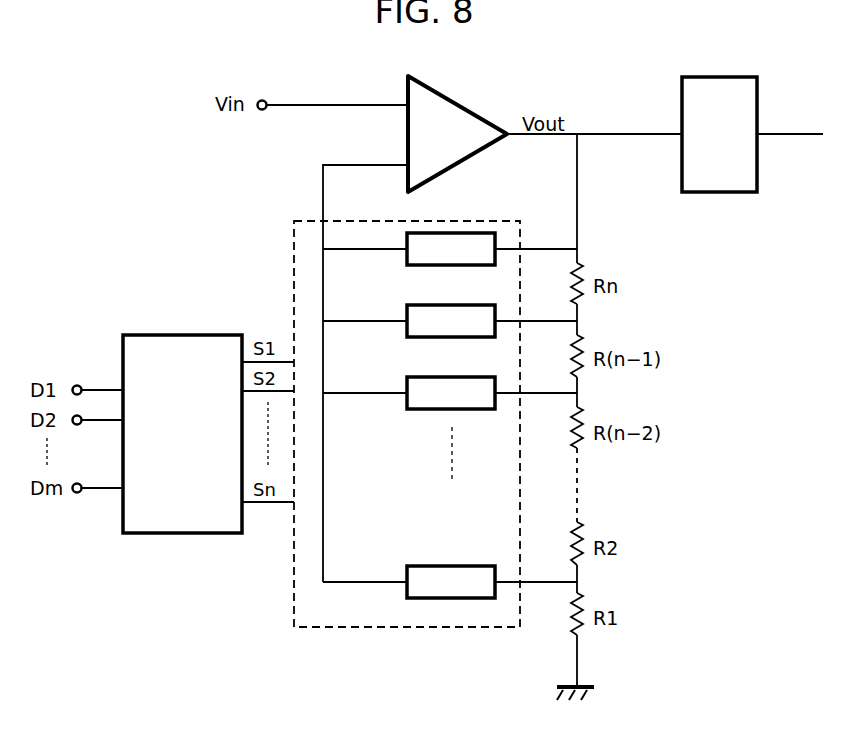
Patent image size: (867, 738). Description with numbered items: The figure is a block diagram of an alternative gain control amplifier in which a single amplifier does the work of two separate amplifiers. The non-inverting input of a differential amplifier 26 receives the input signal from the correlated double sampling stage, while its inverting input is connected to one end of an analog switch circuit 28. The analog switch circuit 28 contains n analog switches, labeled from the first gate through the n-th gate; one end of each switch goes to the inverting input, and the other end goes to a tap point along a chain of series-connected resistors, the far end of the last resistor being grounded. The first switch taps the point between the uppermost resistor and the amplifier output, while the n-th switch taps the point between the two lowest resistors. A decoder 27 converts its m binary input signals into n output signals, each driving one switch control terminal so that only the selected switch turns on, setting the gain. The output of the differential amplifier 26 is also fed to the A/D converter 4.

The differential amplifier 26 is at (436, 90).
The decoder 27 is at (183, 334).
The analog switch circuit 28 is at (498, 221).
The A/D converter 4 is at (759, 100).